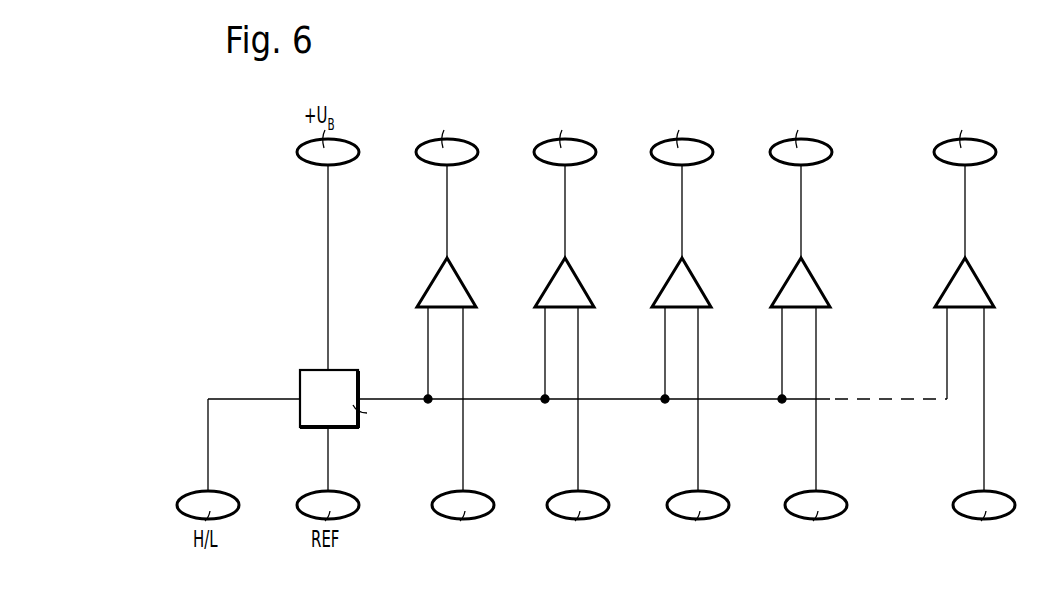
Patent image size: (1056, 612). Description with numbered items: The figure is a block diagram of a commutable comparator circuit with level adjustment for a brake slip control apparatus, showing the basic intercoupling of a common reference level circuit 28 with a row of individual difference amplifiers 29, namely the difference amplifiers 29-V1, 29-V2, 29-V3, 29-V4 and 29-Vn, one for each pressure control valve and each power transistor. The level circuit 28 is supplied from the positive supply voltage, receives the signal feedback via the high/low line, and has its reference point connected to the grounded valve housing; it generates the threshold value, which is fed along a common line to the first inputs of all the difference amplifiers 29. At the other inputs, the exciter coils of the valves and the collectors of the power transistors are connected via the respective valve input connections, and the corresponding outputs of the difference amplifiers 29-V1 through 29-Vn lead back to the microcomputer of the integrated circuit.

The reference level circuit 28 is at (305, 383).
The difference amplifiers 29 is at (720, 331).
The difference amplifier 29-V1 is at (448, 282).
The difference amplifier 29-V2 is at (566, 282).
The difference amplifier 29-V3 is at (683, 282).
The difference amplifier 29-V4 is at (801, 282).
The difference amplifier 29-Vn is at (968, 282).